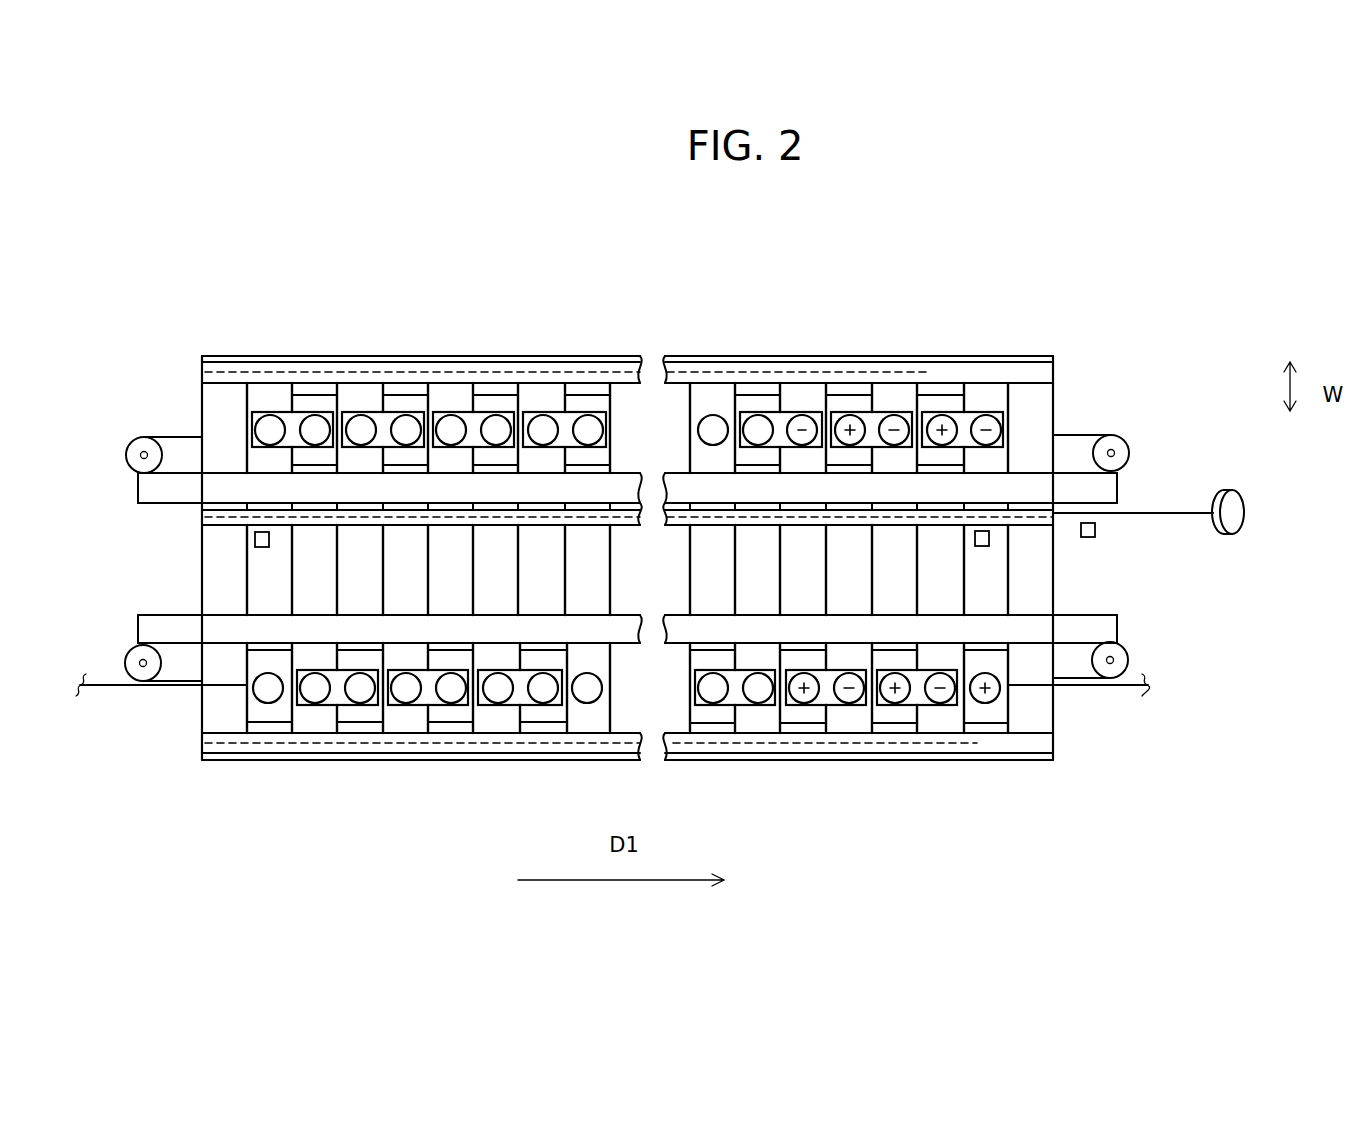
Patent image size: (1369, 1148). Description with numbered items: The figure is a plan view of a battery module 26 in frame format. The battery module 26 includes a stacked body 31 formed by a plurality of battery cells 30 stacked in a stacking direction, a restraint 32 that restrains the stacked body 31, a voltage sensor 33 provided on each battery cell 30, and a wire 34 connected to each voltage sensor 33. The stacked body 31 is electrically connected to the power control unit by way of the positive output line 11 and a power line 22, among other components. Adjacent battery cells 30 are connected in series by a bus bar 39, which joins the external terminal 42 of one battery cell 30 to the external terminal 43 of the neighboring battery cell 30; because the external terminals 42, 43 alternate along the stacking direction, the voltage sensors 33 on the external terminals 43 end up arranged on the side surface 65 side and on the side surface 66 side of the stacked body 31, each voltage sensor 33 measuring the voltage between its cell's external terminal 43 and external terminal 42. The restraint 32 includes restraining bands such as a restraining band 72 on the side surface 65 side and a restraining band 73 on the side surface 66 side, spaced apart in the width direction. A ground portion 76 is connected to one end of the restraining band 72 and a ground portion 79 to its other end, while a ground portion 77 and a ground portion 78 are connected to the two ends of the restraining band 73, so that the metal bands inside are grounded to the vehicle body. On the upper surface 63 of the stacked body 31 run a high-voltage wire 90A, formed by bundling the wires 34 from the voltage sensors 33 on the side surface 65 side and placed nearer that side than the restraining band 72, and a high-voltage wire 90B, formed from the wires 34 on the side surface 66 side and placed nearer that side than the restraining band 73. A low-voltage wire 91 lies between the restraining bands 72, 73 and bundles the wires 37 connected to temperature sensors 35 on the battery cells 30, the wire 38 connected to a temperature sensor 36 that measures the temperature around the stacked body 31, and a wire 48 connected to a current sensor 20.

The positive output line 11 is at (1125, 688).
The current sensor 20 is at (1247, 512).
The power line 22 is at (117, 688).
The battery module 26 is at (660, 312).
The battery cell 30 is at (893, 395).
The stacked body 31 is at (984, 340).
The restraint 32 is at (1078, 372).
The voltage sensor 33 is at (947, 782).
The wire 34 is at (862, 782).
The temperature sensor 35 is at (262, 548).
The temperature sensor 36 is at (1096, 530).
The wire 37 is at (255, 533).
The wire 38 is at (1055, 518).
The bus bar 39 is at (791, 397).
The external terminal 42 is at (813, 398).
The external terminal 43 is at (757, 395).
The wire 48 is at (1183, 516).
The upper surface 63 is at (362, 583).
The side surface 65 is at (352, 356).
The side surface 66 is at (448, 760).
The restraining band 72 is at (1030, 490).
The restraining band 73 is at (590, 630).
The ground portion 76 is at (126, 455).
The ground portion 77 is at (126, 663).
The ground portion 78 is at (1130, 660).
The ground portion 79 is at (1130, 453).
The high-voltage wire 90A is at (608, 366).
The high-voltage wire 90B is at (762, 745).
The low-voltage wire 91 is at (202, 503).